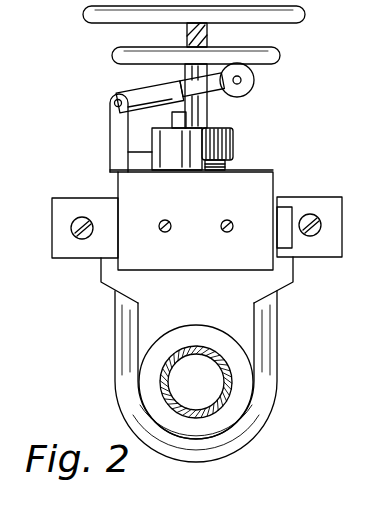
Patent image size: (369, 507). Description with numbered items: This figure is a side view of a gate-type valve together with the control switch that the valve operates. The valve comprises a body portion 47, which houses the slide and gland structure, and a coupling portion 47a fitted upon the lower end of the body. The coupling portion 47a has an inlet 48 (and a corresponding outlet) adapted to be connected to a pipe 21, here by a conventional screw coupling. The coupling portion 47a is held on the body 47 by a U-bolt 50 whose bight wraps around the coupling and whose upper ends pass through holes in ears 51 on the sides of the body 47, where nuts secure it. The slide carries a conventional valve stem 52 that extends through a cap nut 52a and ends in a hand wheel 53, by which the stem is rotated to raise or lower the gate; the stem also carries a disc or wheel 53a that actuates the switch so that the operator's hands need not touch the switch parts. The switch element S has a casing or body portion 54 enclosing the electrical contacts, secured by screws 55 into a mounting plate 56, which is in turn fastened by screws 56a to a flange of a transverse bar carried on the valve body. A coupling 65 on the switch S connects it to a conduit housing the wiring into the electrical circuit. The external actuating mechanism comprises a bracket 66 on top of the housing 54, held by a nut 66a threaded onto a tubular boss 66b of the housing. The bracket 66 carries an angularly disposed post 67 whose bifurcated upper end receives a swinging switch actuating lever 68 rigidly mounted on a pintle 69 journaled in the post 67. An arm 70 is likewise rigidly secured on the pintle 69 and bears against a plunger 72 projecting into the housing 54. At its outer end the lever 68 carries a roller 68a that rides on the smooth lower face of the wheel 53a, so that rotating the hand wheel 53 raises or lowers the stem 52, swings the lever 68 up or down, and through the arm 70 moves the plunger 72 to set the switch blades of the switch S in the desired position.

The pipe 21 is at (231, 400).
The body portion 47 is at (243, 313).
The coupling portion 47a is at (254, 374).
The inlet 48 is at (145, 380).
The U-bolt 50 is at (128, 418).
The ears 51 is at (101, 270).
The valve stem 52 is at (208, 116).
The cap nut 52a is at (233, 145).
The hand wheel 53 is at (89, 21).
The disc or wheel 53a is at (113, 56).
The casing or body portion 54 is at (277, 175).
The screws 55 is at (225, 221).
The mounting plate 56 is at (106, 198).
The screws 56a is at (71, 228).
The coupling 65 is at (280, 210).
The bracket 66 is at (140, 173).
The nut 66a is at (128, 151).
The tubular boss 66b is at (193, 173).
The post 67 is at (110, 130).
The switch actuating lever 68 is at (187, 86).
The roller 68a is at (252, 88).
The pintle 69 is at (111, 102).
The arm 70 is at (140, 96).
The plunger 72 is at (172, 118).
The switch element S is at (272, 169).